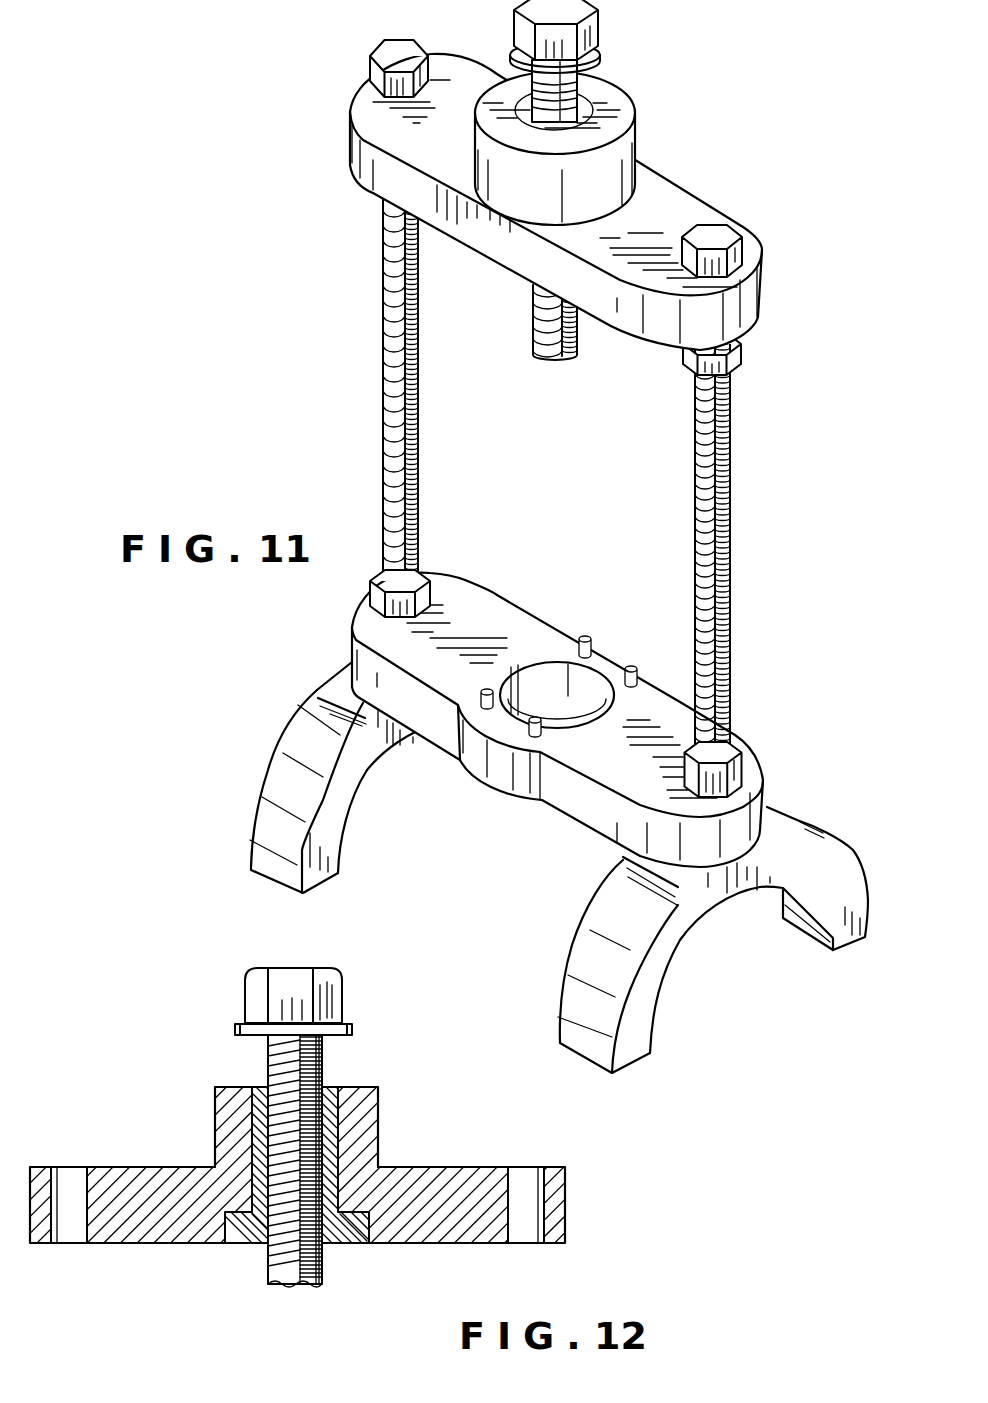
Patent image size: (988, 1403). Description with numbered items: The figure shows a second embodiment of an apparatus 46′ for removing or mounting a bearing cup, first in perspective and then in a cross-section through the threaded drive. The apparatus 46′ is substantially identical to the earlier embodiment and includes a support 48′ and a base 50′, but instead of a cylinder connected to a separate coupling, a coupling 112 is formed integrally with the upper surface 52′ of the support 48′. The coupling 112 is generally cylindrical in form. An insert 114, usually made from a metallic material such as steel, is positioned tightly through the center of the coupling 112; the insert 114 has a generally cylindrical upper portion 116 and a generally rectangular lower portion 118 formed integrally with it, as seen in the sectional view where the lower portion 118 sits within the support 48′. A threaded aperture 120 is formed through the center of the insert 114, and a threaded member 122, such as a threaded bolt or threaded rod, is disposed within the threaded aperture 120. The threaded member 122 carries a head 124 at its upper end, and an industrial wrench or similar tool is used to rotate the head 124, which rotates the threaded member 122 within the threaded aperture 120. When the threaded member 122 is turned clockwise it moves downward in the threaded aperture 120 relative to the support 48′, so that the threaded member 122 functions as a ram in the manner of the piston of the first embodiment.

In FIG. 11, the apparatus 46′ is at (322, 366).
In FIG. 11, the support 48′ is at (341, 172).
In FIG. 12, the support 48′ is at (460, 1158).
In FIG. 11, the base 50′ is at (343, 640).
In FIG. 11, the upper surface 52′ is at (663, 217).
In FIG. 11, the coupling 112 is at (632, 133).
In FIG. 12, the coupling 112 is at (378, 1119).
In FIG. 12, the insert 114 is at (353, 1246).
In FIG. 12, the upper portion 116 is at (267, 1139).
In FIG. 12, the lower portion 118 is at (239, 1223).
In FIG. 12, the threaded aperture 120 is at (271, 1227).
In FIG. 11, the threaded member 122 is at (540, 333).
In FIG. 12, the threaded member 122 is at (303, 1287).
In FIG. 11, the head 124 is at (598, 30).
In FIG. 12, the head 124 is at (253, 997).